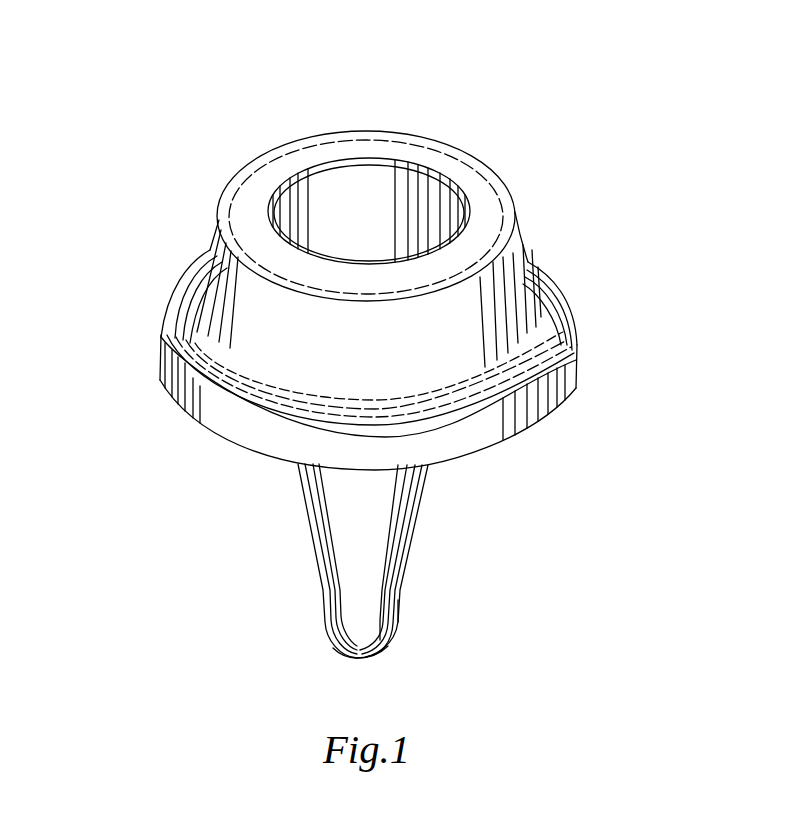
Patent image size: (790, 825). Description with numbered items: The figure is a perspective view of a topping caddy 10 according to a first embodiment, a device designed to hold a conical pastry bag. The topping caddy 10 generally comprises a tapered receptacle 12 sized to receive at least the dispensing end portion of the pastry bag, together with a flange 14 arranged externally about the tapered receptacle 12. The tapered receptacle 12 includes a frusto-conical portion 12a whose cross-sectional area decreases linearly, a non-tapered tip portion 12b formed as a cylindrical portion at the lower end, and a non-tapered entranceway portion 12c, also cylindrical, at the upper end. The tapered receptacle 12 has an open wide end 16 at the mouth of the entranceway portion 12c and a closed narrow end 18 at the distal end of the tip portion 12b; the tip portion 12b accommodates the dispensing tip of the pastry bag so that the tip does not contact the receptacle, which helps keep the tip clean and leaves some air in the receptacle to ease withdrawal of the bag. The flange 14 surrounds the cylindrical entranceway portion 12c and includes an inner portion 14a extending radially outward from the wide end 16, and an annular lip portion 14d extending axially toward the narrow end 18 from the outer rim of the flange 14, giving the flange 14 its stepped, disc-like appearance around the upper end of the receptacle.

The topping caddy 10 is at (552, 177).
The tapered receptacle 12 is at (310, 518).
The frusto-conical portion 12a is at (423, 490).
The tip portion 12b is at (402, 608).
The entranceway portion 12c is at (523, 222).
The flange 14 is at (158, 322).
The inner portion 14a is at (424, 152).
The annular lip portion 14d is at (572, 392).
The open wide end 16 is at (336, 181).
The closed narrow end 18 is at (352, 660).